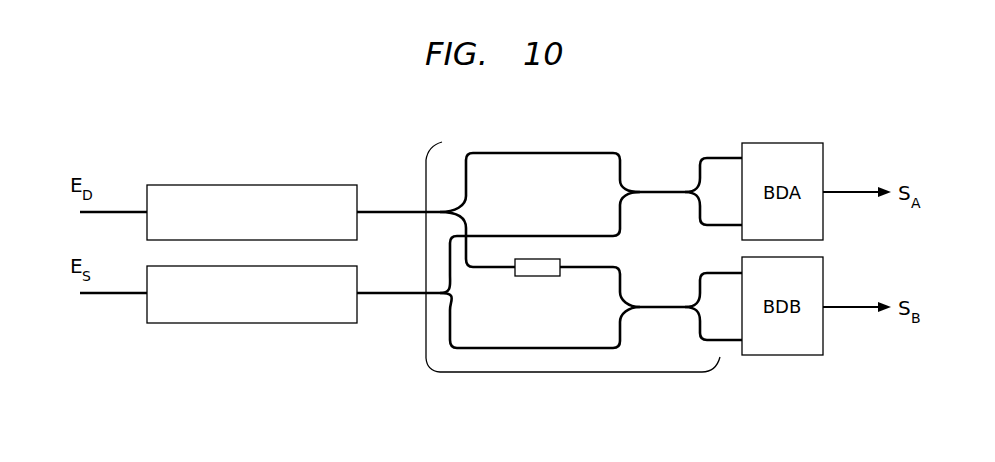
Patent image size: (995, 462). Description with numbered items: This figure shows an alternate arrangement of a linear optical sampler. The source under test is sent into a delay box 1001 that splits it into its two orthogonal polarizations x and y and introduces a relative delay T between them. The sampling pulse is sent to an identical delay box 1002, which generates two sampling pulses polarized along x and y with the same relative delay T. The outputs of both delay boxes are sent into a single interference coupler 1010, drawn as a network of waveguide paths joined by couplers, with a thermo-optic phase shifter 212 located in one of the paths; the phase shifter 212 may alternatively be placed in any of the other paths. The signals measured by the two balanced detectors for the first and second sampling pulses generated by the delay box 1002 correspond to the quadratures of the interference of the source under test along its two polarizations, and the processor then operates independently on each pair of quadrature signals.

The delay box 1001 is at (253, 185).
The delay box 1002 is at (252, 323).
The interference coupler 1010 is at (572, 374).
The thermo-optic phase shifter 212 is at (544, 277).